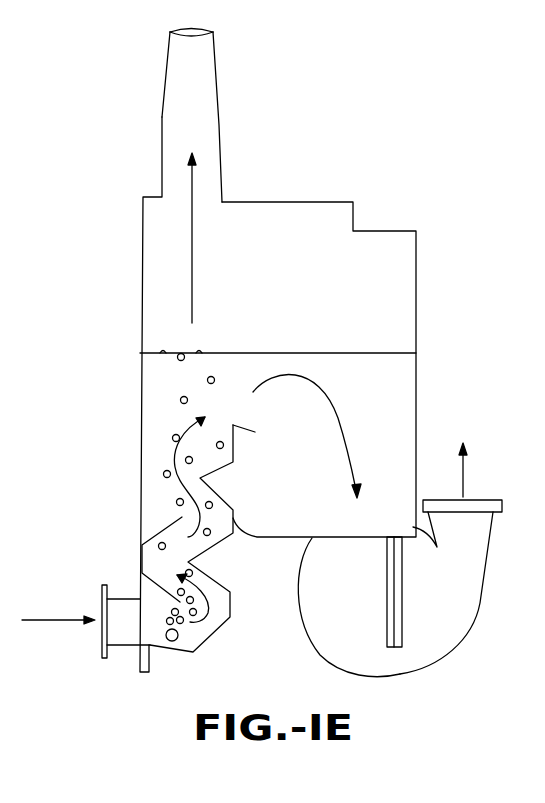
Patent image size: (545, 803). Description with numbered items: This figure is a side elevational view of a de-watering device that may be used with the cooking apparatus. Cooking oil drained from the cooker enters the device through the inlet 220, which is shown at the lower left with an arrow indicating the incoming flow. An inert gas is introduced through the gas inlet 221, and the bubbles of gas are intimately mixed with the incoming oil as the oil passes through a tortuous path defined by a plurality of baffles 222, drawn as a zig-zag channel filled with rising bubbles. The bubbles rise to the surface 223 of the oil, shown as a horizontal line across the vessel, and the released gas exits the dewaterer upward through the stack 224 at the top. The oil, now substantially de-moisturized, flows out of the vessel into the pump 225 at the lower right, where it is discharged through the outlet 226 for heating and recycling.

The inlet 220 is at (127, 599).
The gas inlet 221 is at (180, 653).
The baffles 222 is at (233, 425).
The surface 223 is at (235, 352).
The stack 224 is at (162, 117).
The pump 225 is at (350, 607).
The outlet 226 is at (480, 500).